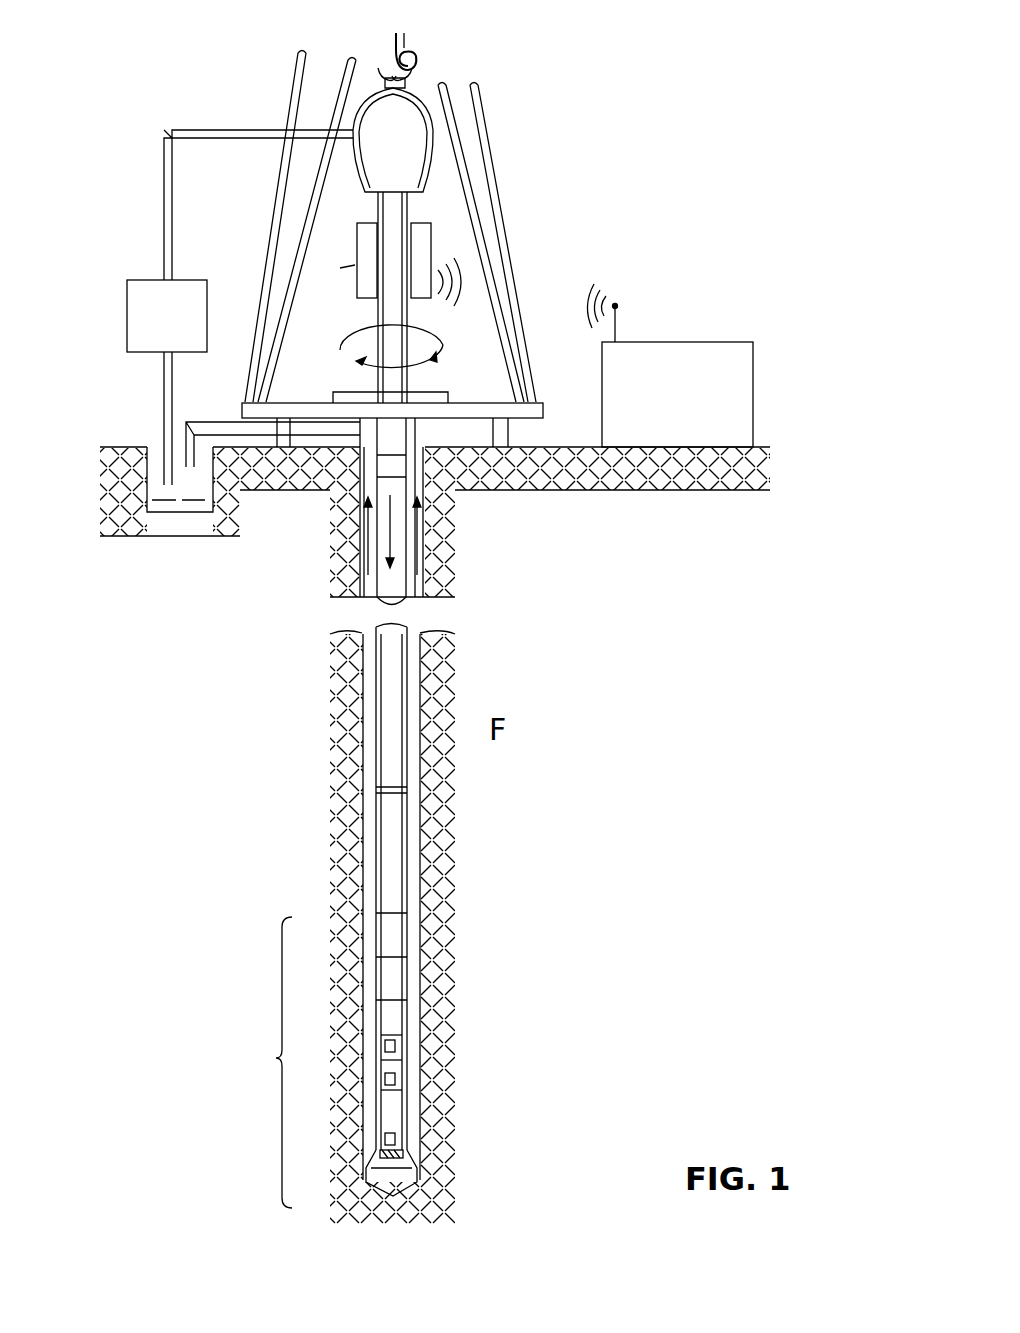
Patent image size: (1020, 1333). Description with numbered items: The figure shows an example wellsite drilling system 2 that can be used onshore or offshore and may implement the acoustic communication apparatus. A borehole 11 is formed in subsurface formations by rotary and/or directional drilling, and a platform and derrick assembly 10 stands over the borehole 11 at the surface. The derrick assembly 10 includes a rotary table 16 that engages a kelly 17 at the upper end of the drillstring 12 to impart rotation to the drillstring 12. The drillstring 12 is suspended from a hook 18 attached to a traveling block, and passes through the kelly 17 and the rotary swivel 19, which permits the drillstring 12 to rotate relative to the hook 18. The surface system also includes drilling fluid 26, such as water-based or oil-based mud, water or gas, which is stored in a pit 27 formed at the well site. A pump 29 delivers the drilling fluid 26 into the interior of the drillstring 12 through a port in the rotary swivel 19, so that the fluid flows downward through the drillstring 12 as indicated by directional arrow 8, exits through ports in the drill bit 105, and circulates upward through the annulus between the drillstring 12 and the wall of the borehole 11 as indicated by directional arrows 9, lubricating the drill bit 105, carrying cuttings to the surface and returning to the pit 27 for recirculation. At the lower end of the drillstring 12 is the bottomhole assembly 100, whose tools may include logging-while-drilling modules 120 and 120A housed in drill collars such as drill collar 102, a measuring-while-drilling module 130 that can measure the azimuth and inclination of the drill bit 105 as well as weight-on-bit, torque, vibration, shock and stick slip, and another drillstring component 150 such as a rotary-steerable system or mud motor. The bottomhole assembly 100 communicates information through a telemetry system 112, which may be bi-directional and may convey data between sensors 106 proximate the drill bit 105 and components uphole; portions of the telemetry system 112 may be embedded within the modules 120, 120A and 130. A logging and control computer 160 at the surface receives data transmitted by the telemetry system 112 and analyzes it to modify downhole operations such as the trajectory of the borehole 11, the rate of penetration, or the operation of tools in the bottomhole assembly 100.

The wellsite drilling system 2 is at (170, 55).
The platform and derrick assembly 10 is at (518, 126).
The hook 18 is at (392, 38).
The rotary swivel 19 is at (385, 178).
The kelly 17 is at (385, 375).
The drillstring 12 is at (389, 444).
The borehole 11 is at (450, 398).
The rotary table 16 is at (419, 452).
The directional arrows 9 is at (390, 528).
The directional arrow 8 is at (357, 525).
The pump 29 is at (135, 355).
The pit 27 is at (152, 446).
The drilling fluid 26 is at (185, 515).
The logging and control computer 160 is at (665, 342).
The bottomhole assembly 100 is at (278, 1058).
The drill collar 102 is at (383, 980).
The telemetry system 112 is at (387, 1040).
The logging-while-drilling module 120 is at (398, 978).
The measuring-while-drilling module 130 is at (398, 1027).
The logging-while-drilling module 120A is at (398, 1067).
The drillstring component 150 is at (398, 1112).
The drill bit 105 is at (398, 1163).
The sensors 106 is at (387, 1160).